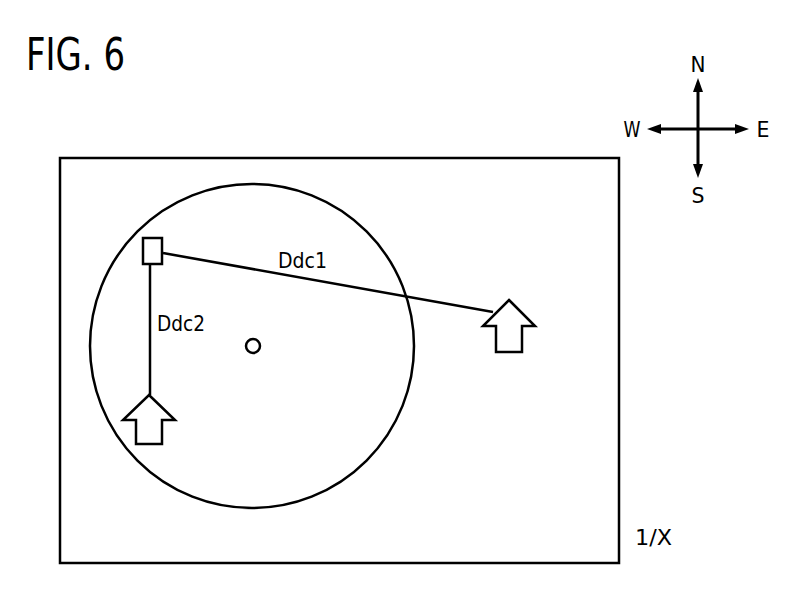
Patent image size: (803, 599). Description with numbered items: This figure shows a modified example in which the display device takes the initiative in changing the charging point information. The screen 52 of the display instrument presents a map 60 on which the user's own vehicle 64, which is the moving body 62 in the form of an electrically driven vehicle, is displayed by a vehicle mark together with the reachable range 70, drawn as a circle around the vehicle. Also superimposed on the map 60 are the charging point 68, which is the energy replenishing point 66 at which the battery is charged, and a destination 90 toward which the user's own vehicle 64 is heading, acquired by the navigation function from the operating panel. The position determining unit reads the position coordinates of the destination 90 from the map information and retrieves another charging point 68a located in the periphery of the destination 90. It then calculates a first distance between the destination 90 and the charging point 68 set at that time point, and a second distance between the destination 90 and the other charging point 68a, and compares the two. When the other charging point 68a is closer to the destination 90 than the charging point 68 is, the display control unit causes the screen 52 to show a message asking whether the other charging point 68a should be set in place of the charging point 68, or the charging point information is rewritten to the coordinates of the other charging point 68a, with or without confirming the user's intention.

The screen 52 is at (525, 157).
The map 60 is at (383, 197).
The reachable range 70 is at (378, 447).
The user's own vehicle 64 is at (302, 359).
The moving body 62 is at (258, 351).
The destination 90 is at (152, 250).
The charging point 68 is at (536, 300).
The energy replenishing point 66 is at (508, 300).
The other charging point 68a is at (164, 433).